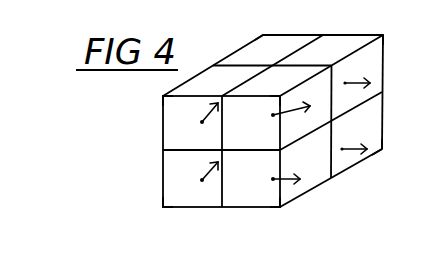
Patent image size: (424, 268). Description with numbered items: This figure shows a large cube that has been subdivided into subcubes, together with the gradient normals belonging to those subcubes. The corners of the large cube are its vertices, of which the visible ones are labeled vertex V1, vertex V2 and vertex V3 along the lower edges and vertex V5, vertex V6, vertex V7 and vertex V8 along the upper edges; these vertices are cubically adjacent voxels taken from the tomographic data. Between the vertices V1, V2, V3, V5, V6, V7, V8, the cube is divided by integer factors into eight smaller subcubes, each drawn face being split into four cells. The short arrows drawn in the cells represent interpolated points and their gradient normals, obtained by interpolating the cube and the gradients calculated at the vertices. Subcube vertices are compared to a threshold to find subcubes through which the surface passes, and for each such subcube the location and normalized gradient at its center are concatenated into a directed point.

The vertex of the large cube V1 is at (162, 214).
The vertex of the large cube V2 is at (279, 214).
The vertex of the large cube V3 is at (391, 151).
The vertex of the large cube V5 is at (151, 95).
The vertex of the large cube V6 is at (275, 92).
The vertex of the large cube V7 is at (394, 36).
The vertex of the large cube V8 is at (266, 27).